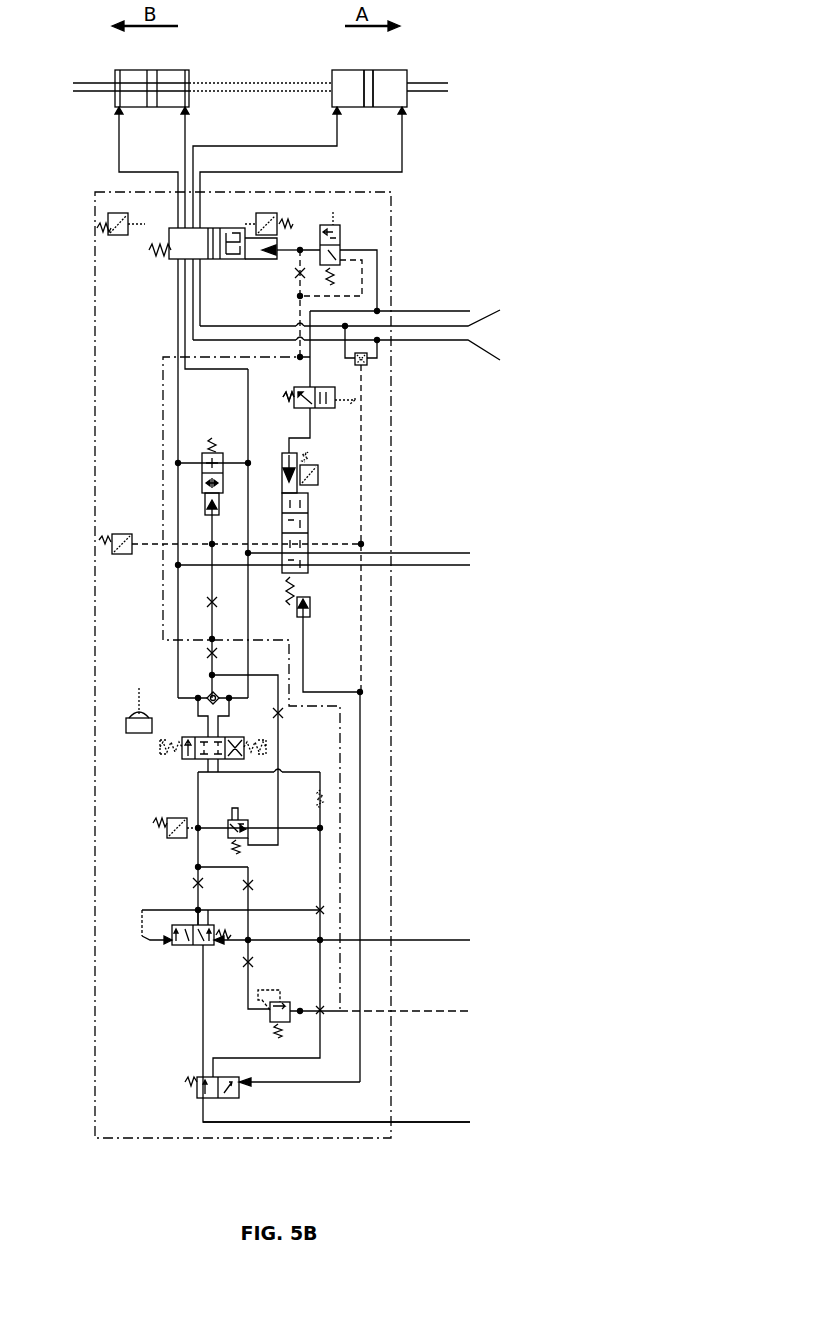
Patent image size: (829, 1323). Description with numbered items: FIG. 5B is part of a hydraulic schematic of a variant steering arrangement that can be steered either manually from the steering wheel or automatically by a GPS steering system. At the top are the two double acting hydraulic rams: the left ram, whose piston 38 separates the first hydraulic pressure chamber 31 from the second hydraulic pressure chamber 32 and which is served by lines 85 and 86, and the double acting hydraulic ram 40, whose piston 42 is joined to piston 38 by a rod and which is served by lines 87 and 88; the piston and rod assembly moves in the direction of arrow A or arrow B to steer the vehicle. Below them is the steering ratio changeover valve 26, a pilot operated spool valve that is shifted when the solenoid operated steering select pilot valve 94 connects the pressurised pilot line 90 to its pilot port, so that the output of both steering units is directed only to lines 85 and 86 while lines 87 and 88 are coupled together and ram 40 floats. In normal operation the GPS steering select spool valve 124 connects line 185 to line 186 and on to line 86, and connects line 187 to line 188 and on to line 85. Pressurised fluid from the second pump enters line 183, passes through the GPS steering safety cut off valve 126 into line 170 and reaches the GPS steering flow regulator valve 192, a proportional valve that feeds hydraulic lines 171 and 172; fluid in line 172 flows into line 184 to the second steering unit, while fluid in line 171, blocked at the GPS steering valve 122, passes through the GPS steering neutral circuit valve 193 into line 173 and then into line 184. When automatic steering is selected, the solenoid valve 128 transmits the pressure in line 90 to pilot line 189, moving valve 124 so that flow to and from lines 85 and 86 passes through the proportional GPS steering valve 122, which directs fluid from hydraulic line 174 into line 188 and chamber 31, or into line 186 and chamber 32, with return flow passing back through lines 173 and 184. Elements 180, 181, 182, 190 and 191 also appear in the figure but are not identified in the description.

The steering ratio changeover valve 26 is at (160, 273).
The first hydraulic pressure chamber 31 is at (124, 80).
The second hydraulic pressure chamber 32 is at (180, 80).
The piston 38 is at (152, 80).
The double acting hydraulic ram 40 is at (414, 57).
The piston 42 is at (368, 80).
The line 85 is at (118, 125).
The line 86 is at (186, 125).
The line 87 is at (278, 146).
The line 88 is at (402, 147).
The pilot line 90 is at (445, 311).
The steering select pilot valve 94 is at (336, 216).
The GPS steering valve 122 is at (158, 751).
The GPS steering select spool valve 124 is at (312, 533).
The GPS steering safety cut off valve 126 is at (190, 1100).
The solenoid valve 128 is at (323, 408).
The line 170 is at (200, 1010).
The hydraulic line 171 is at (198, 903).
The hydraulic line 172 is at (280, 910).
The line 173 is at (320, 867).
The hydraulic line 174 is at (200, 802).
The pilot line 180 is at (346, 1084).
The supply line 181 is at (468, 326).
The supply line 182 is at (468, 340).
The line 183 is at (430, 1124).
The line 184 is at (434, 938).
The line 185 is at (445, 553).
The line 186 is at (250, 516).
The line 187 is at (445, 565).
The line 188 is at (178, 490).
The pilot line 189 is at (302, 432).
The relief valve 190 is at (365, 370).
The valve block 191 is at (340, 757).
The GPS steering flow regulator valve 192 is at (172, 946).
The GPS steering neutral circuit valve 193 is at (245, 835).